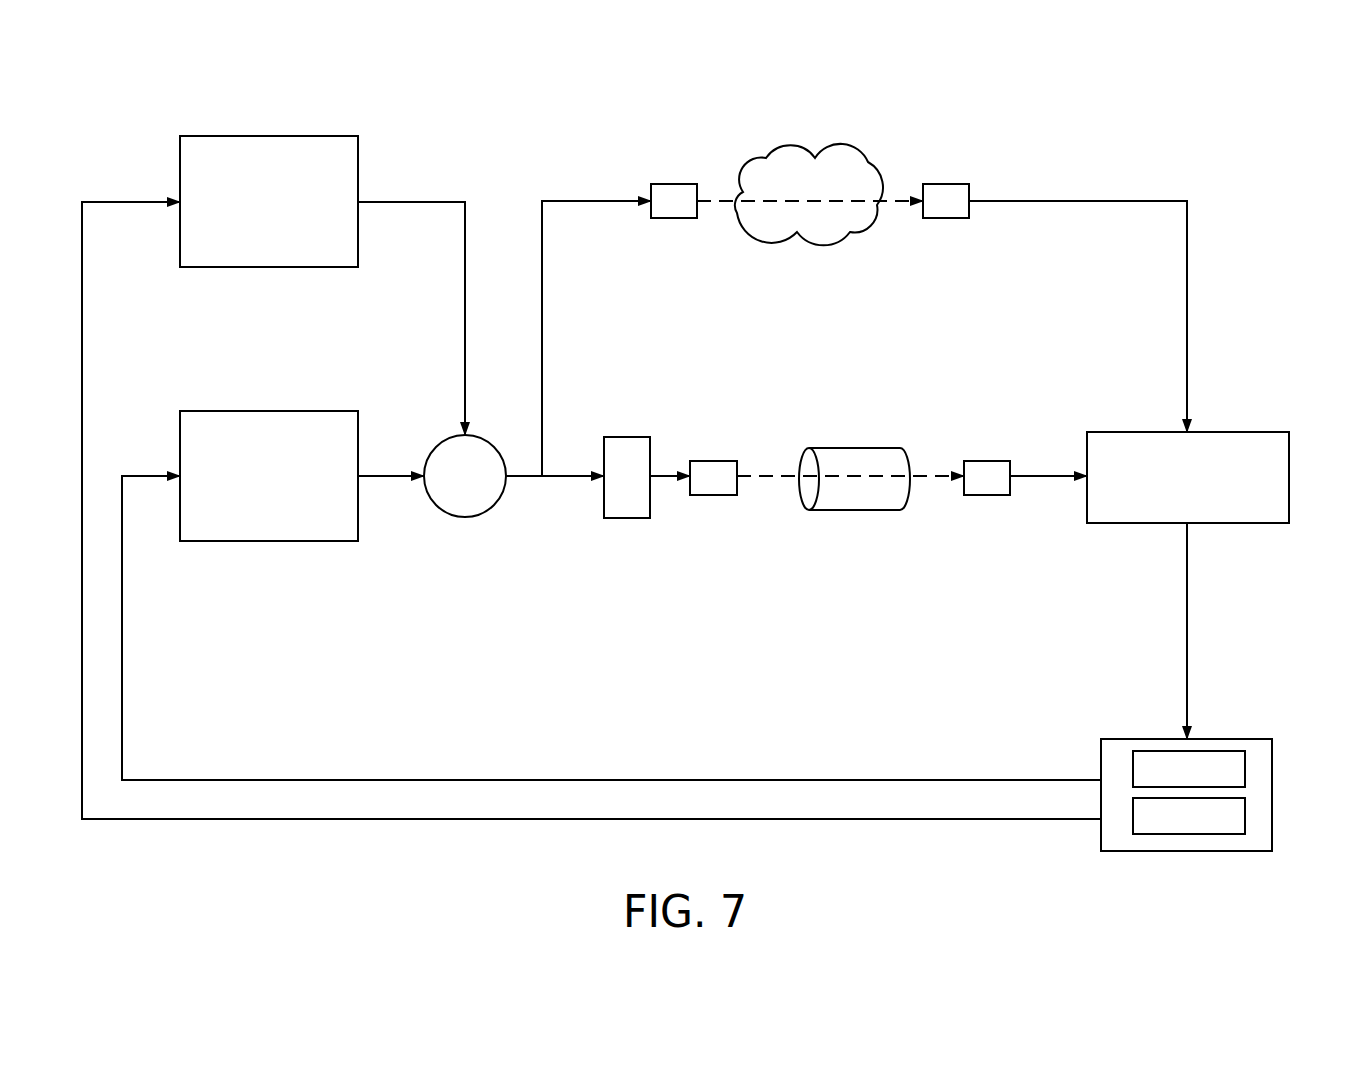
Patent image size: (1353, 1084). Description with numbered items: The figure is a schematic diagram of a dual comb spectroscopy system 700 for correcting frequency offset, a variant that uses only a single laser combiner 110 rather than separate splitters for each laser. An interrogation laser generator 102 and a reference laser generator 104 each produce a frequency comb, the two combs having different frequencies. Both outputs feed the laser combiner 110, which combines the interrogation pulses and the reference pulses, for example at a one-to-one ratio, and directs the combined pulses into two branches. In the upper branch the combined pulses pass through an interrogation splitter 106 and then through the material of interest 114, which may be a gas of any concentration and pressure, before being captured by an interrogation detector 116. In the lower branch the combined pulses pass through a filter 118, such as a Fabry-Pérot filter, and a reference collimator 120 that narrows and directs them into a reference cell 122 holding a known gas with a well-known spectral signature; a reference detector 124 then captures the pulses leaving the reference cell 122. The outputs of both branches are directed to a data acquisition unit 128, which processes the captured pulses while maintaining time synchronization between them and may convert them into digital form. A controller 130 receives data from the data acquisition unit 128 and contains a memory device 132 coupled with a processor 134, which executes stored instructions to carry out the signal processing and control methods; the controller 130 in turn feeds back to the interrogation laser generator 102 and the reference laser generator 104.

The dual comb spectroscopy system 700 is at (1170, 123).
The interrogation laser generator 102 is at (219, 136).
The reference laser generator 104 is at (218, 411).
The interrogation splitter 106 is at (664, 184).
The laser combiner 110 is at (442, 448).
The material of interest 114 is at (838, 147).
The interrogation detector 116 is at (938, 184).
The filter 118 is at (627, 437).
The reference collimator 120 is at (698, 461).
The reference cell 122 is at (830, 448).
The reference detector 124 is at (980, 461).
The data acquisition unit 128 is at (1143, 432).
The controller 130 is at (1120, 739).
The memory device 132 is at (1245, 766).
The processor 134 is at (1245, 816).